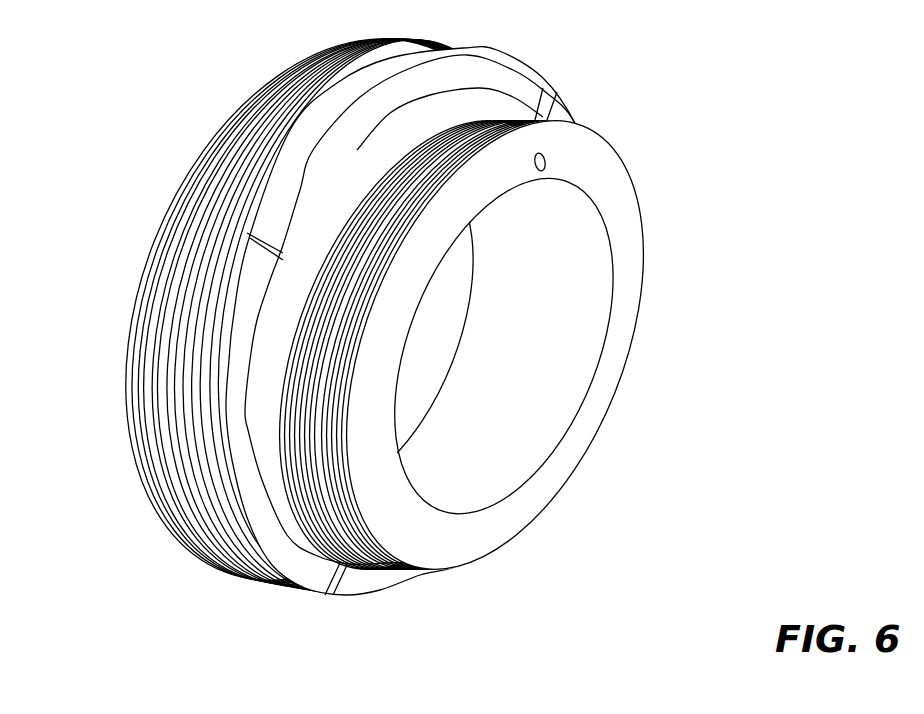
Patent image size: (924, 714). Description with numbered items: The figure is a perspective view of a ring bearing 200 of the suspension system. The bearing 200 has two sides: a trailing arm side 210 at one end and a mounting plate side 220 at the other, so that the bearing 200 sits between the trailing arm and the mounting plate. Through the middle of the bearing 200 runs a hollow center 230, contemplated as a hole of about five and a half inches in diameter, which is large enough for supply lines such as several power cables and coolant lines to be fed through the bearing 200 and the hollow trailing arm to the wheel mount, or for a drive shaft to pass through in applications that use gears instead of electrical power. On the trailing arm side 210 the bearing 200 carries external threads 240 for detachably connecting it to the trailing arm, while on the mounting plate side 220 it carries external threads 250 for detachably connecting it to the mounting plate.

The bearing 200 is at (806, 93).
The trailing arm side 210 is at (184, 190).
The mounting plate side 220 is at (461, 538).
The hollow center 230 is at (531, 337).
The external threads 240 is at (150, 352).
The external threads 250 is at (307, 397).